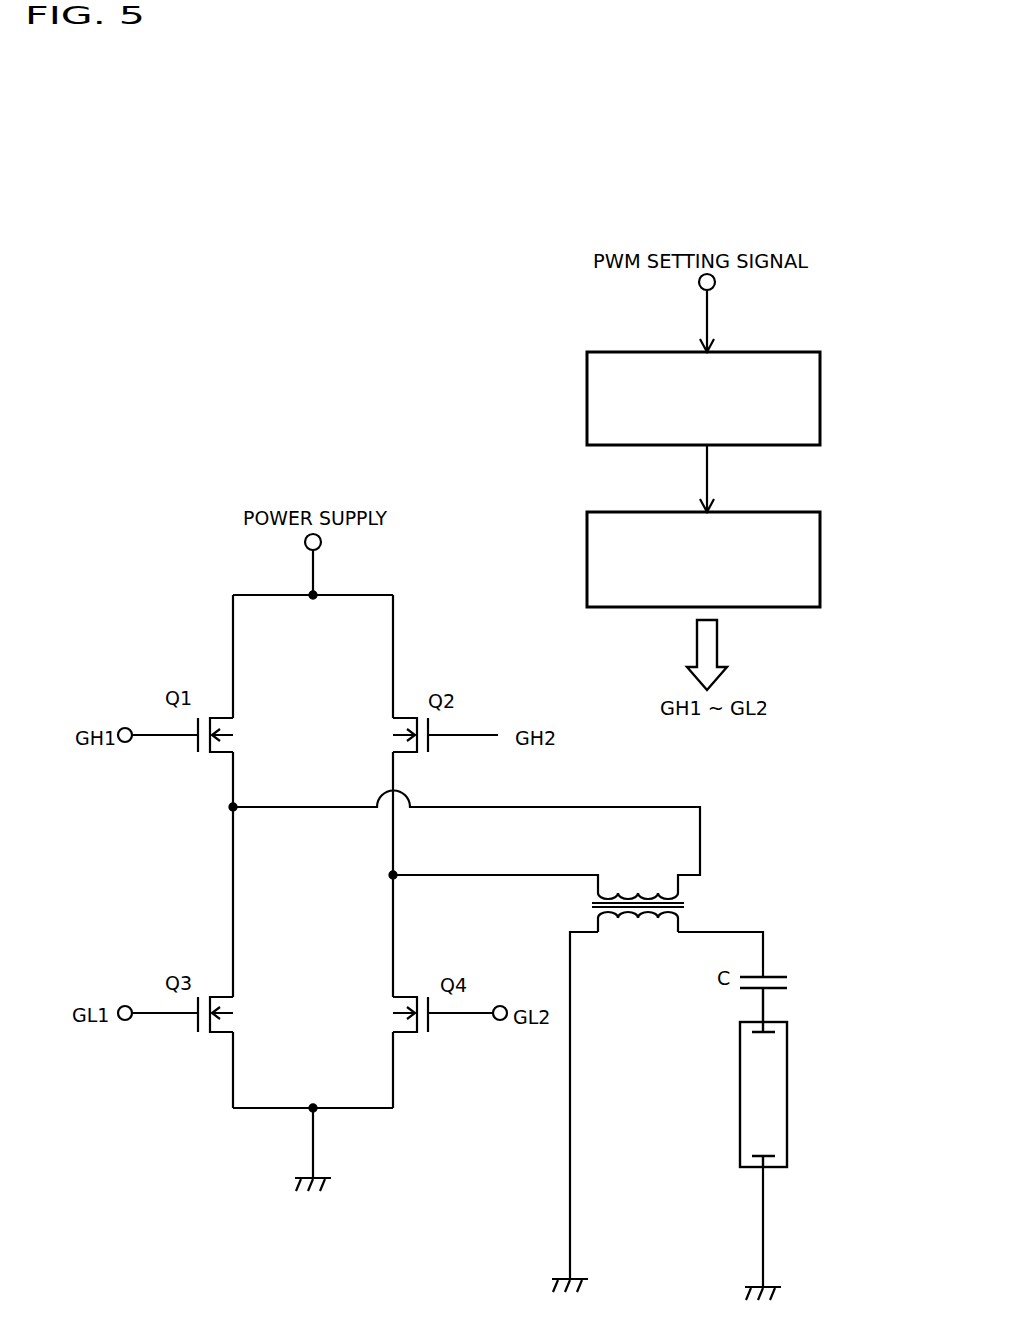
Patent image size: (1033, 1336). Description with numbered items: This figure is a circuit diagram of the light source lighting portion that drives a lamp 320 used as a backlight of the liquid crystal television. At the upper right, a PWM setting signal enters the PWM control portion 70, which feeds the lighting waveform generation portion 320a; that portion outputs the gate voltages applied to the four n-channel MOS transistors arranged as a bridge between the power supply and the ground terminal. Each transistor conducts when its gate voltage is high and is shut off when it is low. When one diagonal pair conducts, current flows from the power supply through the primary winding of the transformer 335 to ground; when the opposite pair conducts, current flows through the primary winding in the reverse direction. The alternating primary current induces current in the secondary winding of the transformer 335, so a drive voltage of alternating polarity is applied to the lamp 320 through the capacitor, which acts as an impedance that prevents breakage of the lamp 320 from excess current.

The PWM control portion 70 is at (587, 385).
The lighting waveform generation portion 320a is at (587, 550).
The transformer 335 is at (658, 908).
The lamp 320 is at (787, 1070).